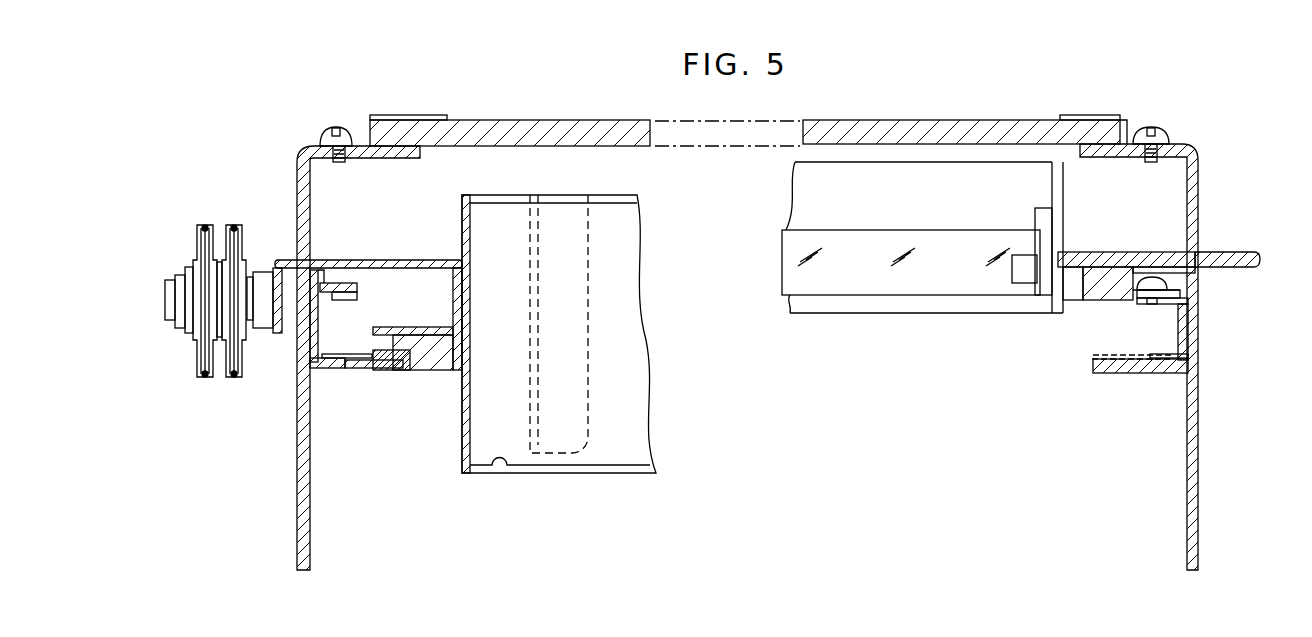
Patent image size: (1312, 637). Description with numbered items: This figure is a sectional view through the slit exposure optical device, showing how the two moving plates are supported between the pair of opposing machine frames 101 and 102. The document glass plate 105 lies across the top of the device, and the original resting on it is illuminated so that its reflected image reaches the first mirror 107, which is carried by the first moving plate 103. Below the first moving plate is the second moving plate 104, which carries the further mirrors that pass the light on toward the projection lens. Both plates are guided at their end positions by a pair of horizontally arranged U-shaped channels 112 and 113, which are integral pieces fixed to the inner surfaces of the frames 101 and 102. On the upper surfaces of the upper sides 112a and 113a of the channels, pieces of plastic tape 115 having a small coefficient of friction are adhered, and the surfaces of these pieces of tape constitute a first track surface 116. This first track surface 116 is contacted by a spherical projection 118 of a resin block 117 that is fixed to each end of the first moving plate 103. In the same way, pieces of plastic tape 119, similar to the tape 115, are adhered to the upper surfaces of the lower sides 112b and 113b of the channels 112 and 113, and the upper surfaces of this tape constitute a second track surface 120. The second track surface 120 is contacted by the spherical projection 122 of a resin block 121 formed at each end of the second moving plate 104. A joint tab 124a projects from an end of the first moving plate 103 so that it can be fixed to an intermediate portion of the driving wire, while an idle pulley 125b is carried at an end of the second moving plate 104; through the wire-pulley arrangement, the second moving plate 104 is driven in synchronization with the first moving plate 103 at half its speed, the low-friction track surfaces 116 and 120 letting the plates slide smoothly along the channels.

The machine frame 101 is at (298, 488).
The machine frame 102 is at (1199, 460).
The first moving plate 103 is at (925, 168).
The second moving plate 104 is at (624, 464).
The document glass plate 105 is at (857, 128).
The first mirror 107 is at (935, 290).
The U-shaped channel 112 is at (313, 347).
The upper side of U-shaped channel 112a is at (320, 277).
The lower side of U-shaped channel 112b is at (352, 368).
The U-shaped channel 113 is at (1196, 333).
The upper side of U-shaped channel 113a is at (1196, 305).
The lower side of U-shaped channel 113b is at (1125, 373).
The plastic tape 115 is at (358, 285).
The first track surface 116 is at (342, 282).
The resin block 117 is at (1100, 295).
The spherical projection 118 is at (1148, 283).
The plastic tape 119 is at (385, 368).
The second track surface 120 is at (332, 360).
The resin block 121 is at (432, 340).
The spherical projection 122 is at (403, 362).
The joint tab 124a is at (1246, 258).
The idle pulley 125b is at (235, 328).